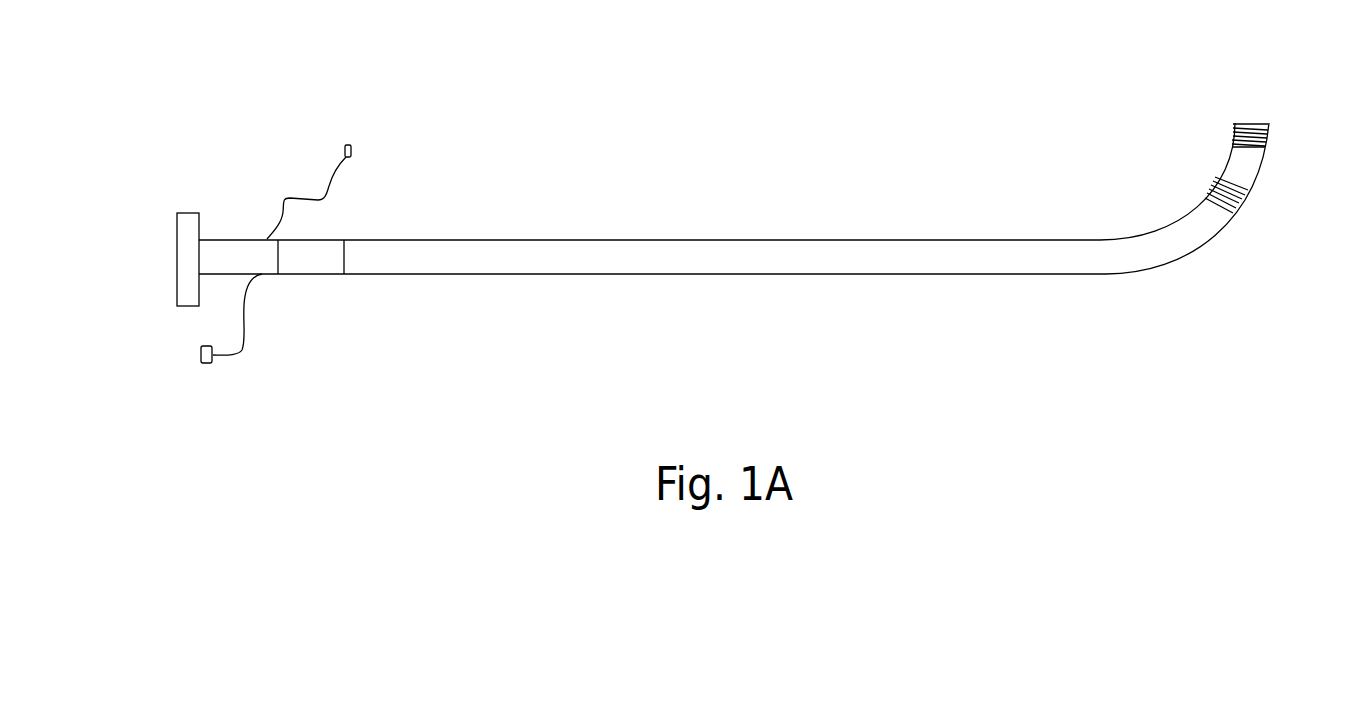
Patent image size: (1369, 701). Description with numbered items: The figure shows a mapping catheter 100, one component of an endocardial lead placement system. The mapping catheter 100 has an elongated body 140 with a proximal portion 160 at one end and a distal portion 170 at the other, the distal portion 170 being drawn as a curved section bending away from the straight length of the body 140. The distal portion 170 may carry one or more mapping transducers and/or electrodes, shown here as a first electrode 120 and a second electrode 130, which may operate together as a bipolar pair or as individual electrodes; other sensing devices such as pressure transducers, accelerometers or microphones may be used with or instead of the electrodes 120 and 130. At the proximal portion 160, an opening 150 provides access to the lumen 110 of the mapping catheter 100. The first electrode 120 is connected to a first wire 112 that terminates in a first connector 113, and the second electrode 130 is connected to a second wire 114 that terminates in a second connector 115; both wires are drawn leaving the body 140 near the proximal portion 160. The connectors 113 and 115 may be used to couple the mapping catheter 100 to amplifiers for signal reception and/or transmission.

The mapping catheter 100 is at (538, 336).
The lumen 110 is at (1262, 123).
The first wire 112 is at (328, 186).
The first connector 113 is at (348, 145).
The second wire 114 is at (247, 314).
The second connector 115 is at (202, 365).
The first electrode 120 is at (1218, 178).
The second electrode 130 is at (1268, 142).
The body 140 is at (898, 275).
The opening 150 is at (177, 268).
The proximal portion 160 is at (190, 194).
The distal portion 170 is at (1164, 172).